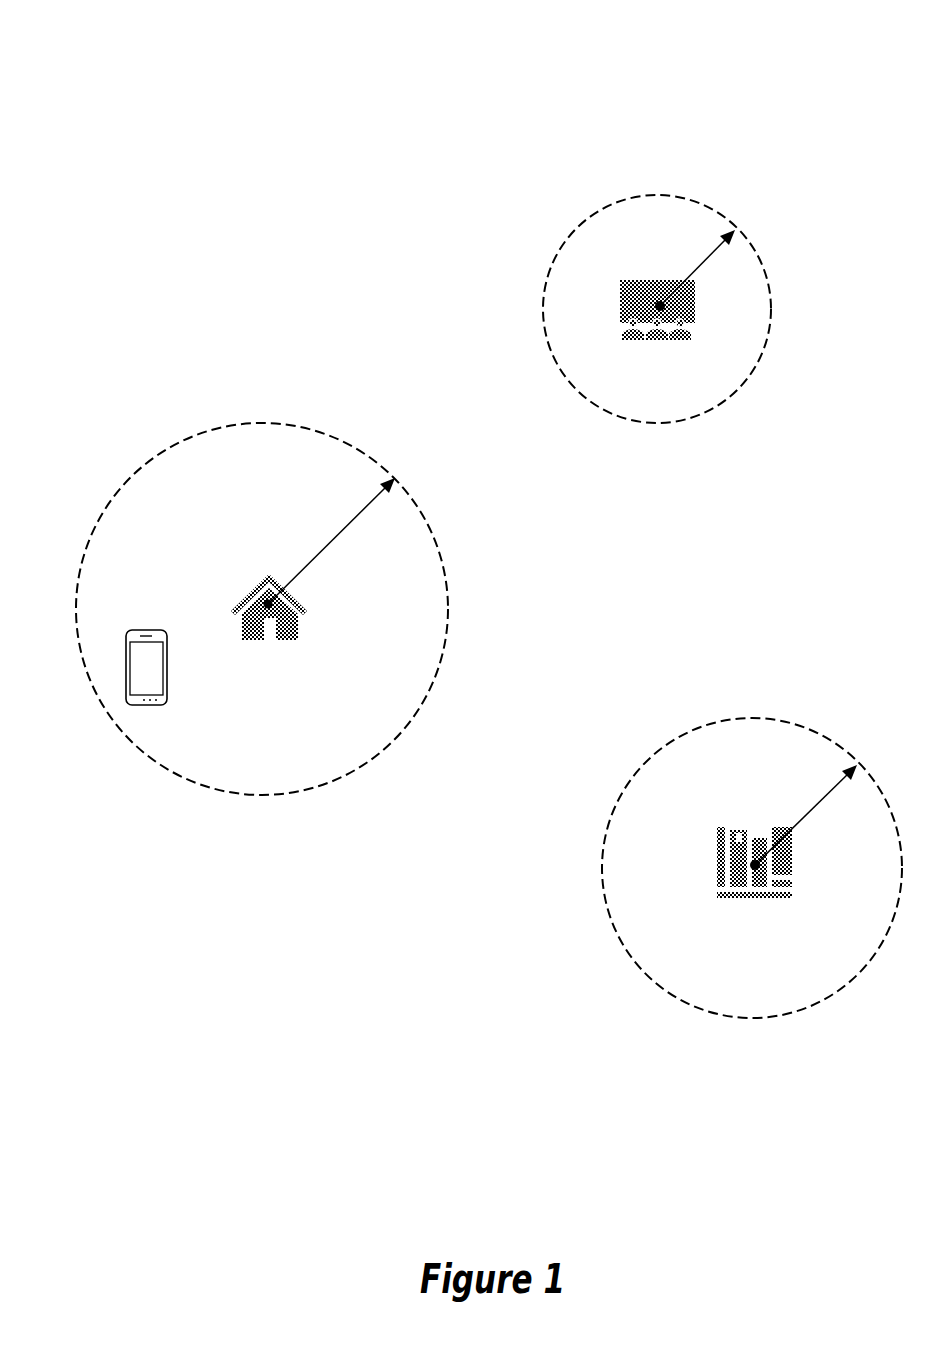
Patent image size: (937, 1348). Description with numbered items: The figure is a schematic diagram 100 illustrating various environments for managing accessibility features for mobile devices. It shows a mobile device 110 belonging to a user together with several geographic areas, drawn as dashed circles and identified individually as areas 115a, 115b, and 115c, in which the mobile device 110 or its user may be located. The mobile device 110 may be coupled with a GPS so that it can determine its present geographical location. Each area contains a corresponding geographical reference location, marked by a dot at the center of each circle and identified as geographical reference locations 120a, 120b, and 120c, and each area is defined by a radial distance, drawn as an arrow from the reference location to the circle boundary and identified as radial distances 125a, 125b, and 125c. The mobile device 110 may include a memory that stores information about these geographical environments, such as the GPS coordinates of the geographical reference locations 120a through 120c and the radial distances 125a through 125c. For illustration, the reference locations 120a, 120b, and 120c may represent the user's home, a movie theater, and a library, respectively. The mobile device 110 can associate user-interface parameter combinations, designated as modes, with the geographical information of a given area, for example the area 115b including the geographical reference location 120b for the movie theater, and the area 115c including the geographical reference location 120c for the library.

The schematic diagram 100 is at (115, 80).
The mobile device 110 is at (147, 626).
The area 115a is at (257, 796).
The area 115b is at (657, 424).
The area 115c is at (762, 1019).
The geographical reference location 120a is at (275, 631).
The geographical reference location 120b is at (657, 340).
The geographical reference location 120c is at (752, 898).
The radial distance 125a is at (327, 533).
The radial distance 125b is at (703, 262).
The radial distance 125c is at (820, 803).